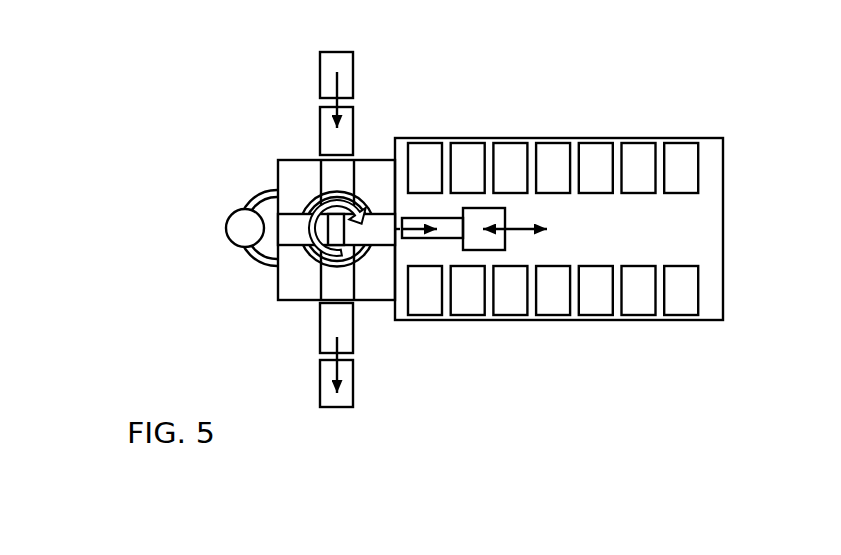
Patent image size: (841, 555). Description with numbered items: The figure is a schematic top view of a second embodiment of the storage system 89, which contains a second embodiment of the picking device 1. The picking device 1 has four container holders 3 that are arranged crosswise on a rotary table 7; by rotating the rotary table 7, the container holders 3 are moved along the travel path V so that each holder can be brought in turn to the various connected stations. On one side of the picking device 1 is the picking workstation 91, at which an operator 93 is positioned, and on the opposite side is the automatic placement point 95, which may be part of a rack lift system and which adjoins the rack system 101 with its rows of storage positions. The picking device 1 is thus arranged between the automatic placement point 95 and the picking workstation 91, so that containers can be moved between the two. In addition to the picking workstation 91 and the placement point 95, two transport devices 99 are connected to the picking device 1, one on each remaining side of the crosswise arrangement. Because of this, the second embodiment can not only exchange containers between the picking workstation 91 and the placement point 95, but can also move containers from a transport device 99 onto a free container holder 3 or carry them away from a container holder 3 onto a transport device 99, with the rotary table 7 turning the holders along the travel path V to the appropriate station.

The picking device 1 is at (297, 95).
The container holder 3 is at (297, 188).
The rotary table 7 is at (305, 183).
The storage system 89 is at (383, 85).
The picking workstation 91 is at (222, 190).
The operator 93 is at (235, 238).
The placement point 95 is at (452, 208).
The transport device 99 is at (310, 78).
The rack system 101 is at (707, 172).
The travel path V is at (276, 282).